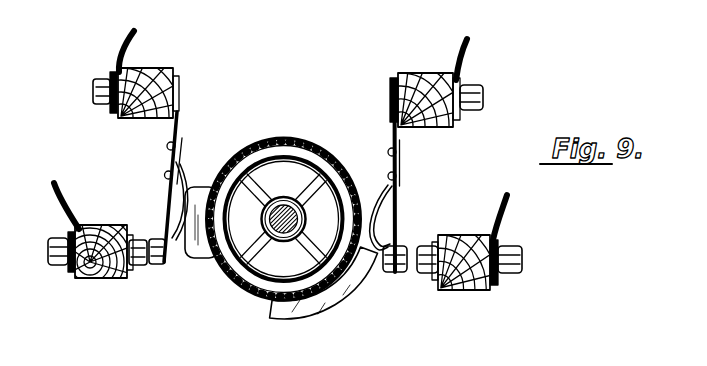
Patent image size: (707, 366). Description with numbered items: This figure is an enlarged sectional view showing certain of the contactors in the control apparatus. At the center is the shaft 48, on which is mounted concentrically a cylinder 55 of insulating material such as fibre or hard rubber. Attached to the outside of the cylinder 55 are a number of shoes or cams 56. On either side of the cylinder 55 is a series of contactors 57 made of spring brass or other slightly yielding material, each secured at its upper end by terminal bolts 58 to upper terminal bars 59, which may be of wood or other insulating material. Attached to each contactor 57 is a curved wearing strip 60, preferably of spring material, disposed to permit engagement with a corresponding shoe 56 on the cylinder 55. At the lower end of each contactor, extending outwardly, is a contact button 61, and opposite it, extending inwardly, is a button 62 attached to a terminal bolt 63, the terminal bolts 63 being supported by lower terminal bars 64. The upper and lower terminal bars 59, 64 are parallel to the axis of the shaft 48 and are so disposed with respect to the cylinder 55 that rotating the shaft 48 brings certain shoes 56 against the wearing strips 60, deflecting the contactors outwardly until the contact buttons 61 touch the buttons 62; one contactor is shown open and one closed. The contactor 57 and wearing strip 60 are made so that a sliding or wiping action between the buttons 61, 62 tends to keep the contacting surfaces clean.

The shaft 48 is at (283, 213).
The cylinder 55 is at (251, 290).
The shoe 56 is at (204, 268).
The contactor 57 is at (399, 218).
The terminal bolt 58 is at (196, 90).
The upper terminal bar 59 is at (155, 72).
The wearing strip 60 is at (183, 176).
The contact button 61 is at (159, 272).
The button 62 is at (136, 276).
The terminal bolt 63 is at (48, 262).
The lower terminal bar 64 is at (480, 289).